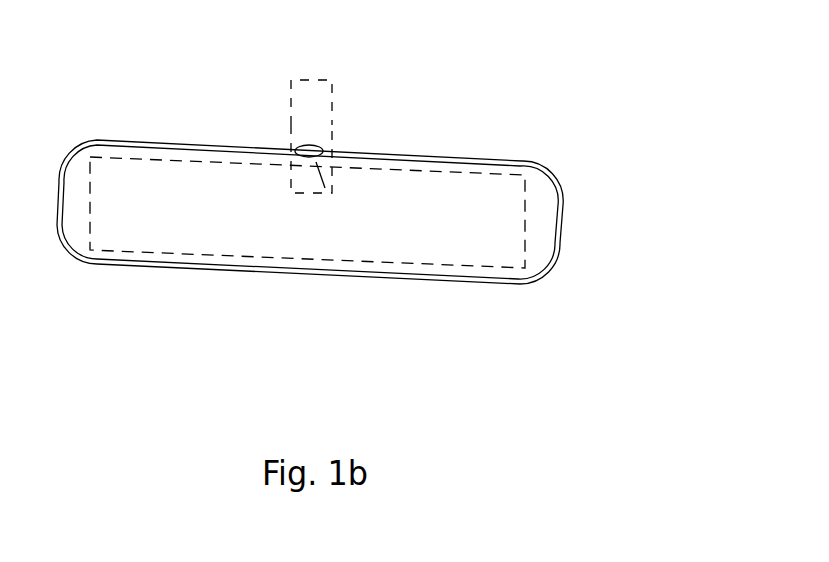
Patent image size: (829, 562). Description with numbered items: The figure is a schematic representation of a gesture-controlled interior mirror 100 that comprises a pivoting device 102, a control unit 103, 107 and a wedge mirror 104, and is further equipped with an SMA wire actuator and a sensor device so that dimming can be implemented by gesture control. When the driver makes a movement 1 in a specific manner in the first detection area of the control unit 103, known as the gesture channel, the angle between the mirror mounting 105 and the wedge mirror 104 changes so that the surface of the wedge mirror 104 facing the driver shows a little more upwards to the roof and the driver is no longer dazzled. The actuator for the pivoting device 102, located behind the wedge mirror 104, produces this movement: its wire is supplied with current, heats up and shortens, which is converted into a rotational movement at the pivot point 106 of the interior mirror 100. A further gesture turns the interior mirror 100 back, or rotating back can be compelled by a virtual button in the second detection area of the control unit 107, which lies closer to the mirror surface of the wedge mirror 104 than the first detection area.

The movement 1 is at (365, 204).
The interior mirror 100 is at (290, 301).
The pivoting device 102 is at (330, 150).
The control unit 103 is at (528, 243).
The wedge mirror 104 is at (500, 205).
The mirror mounting 105 is at (307, 100).
The pivot point 106 is at (305, 148).
The control unit 107 is at (314, 172).